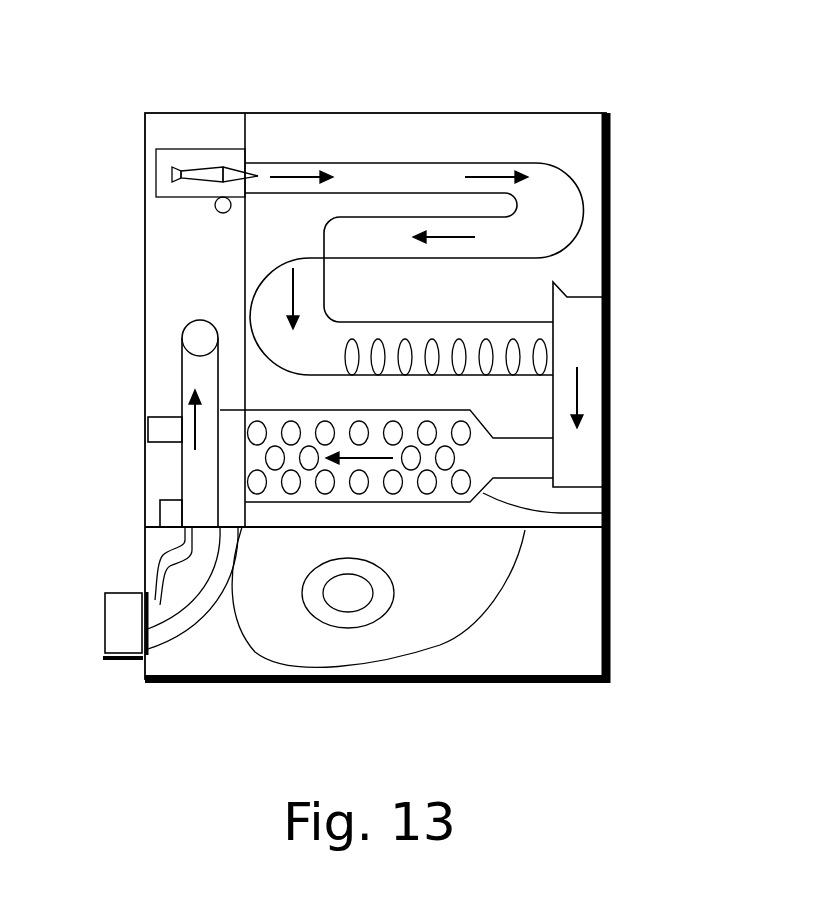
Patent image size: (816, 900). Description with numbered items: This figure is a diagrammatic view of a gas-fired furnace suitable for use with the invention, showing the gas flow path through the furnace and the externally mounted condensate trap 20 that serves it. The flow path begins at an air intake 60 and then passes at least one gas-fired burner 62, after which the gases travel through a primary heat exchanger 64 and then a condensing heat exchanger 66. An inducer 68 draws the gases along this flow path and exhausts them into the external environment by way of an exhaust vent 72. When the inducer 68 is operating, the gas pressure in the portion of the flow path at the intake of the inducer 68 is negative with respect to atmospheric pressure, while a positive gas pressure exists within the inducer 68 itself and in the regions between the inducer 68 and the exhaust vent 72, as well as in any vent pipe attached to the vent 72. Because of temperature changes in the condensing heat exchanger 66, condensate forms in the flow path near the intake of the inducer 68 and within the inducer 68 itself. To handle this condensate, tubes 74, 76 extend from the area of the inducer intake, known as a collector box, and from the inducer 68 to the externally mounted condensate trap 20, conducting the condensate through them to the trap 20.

The condensate trap 20 is at (98, 655).
The air intake 60 is at (214, 210).
The gas-fired burner 62 is at (220, 140).
The primary heat exchanger 64 is at (573, 164).
The condensing heat exchanger 66 is at (606, 513).
The inducer 68 is at (183, 485).
The exhaust vent 72 is at (173, 333).
The tube 74 is at (147, 567).
The tube 76 is at (190, 623).